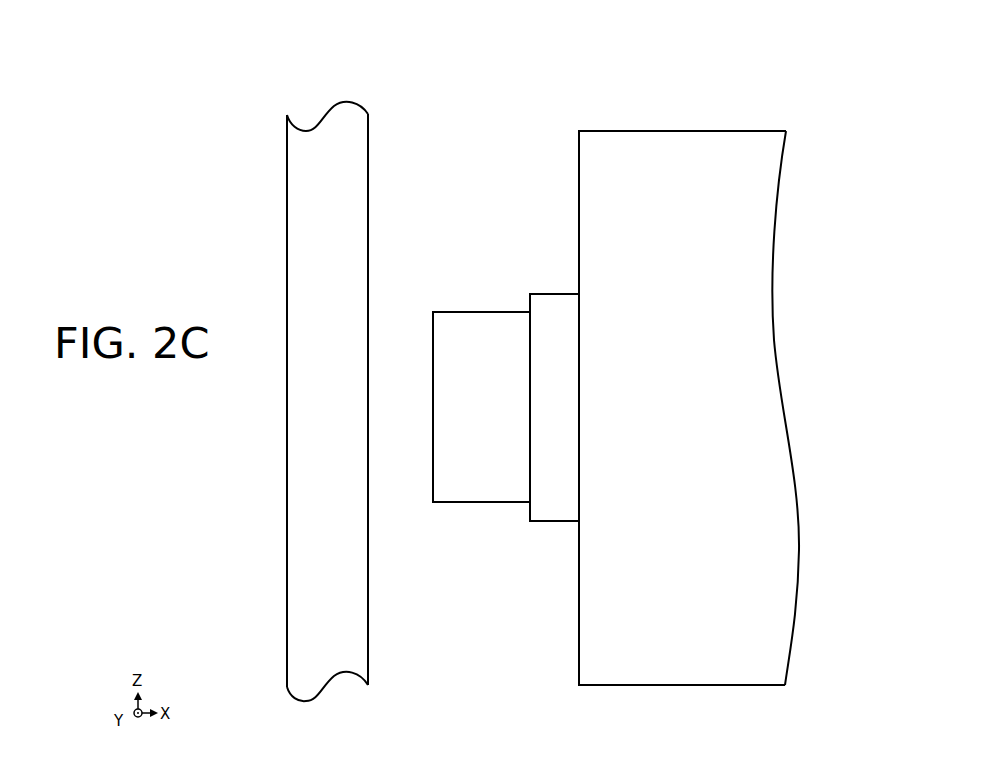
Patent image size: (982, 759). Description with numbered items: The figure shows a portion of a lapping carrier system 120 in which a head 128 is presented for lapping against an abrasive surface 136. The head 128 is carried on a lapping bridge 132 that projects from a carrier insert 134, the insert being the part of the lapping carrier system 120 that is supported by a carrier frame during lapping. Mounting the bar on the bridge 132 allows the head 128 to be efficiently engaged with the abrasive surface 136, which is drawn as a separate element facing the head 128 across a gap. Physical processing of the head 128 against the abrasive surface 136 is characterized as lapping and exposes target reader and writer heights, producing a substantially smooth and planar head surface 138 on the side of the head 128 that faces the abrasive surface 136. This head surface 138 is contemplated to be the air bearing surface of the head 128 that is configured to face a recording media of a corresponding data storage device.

The lapping carrier system 120 is at (808, 74).
The head 128 is at (499, 493).
The lapping bridge 132 is at (530, 294).
The carrier insert 134 is at (625, 157).
The abrasive surface 136 is at (368, 556).
The head surface 138 is at (433, 400).